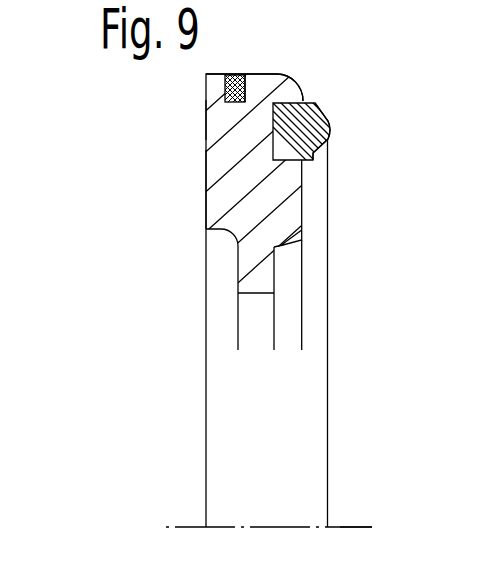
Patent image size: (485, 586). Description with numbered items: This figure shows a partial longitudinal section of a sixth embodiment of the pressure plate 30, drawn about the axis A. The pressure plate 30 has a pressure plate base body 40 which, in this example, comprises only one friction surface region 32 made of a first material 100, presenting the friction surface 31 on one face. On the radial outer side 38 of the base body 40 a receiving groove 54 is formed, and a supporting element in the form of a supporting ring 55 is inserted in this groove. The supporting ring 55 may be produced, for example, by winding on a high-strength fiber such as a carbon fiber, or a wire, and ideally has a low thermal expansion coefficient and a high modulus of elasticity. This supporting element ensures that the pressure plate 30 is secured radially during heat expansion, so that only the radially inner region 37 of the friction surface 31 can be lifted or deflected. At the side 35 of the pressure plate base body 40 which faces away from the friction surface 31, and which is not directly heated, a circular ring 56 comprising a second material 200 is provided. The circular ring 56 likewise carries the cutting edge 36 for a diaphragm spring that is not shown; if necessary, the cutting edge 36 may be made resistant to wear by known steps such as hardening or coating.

The pressure plate 30 is at (139, 341).
The friction surface 31 is at (206, 217).
The friction surface region 32 is at (206, 97).
The side facing away from the friction surface 35 is at (325, 81).
The cutting edge 36 is at (332, 128).
The radially inner region 37 is at (176, 244).
The radial outer side 38 is at (173, 121).
The pressure plate base body 40 is at (256, 325).
The receiving groove 54 is at (245, 92).
The supporting ring 55 is at (235, 76).
The circular ring 56 is at (314, 108).
The first material 100 is at (206, 170).
The second material 200 is at (311, 152).
The axis A is at (353, 527).